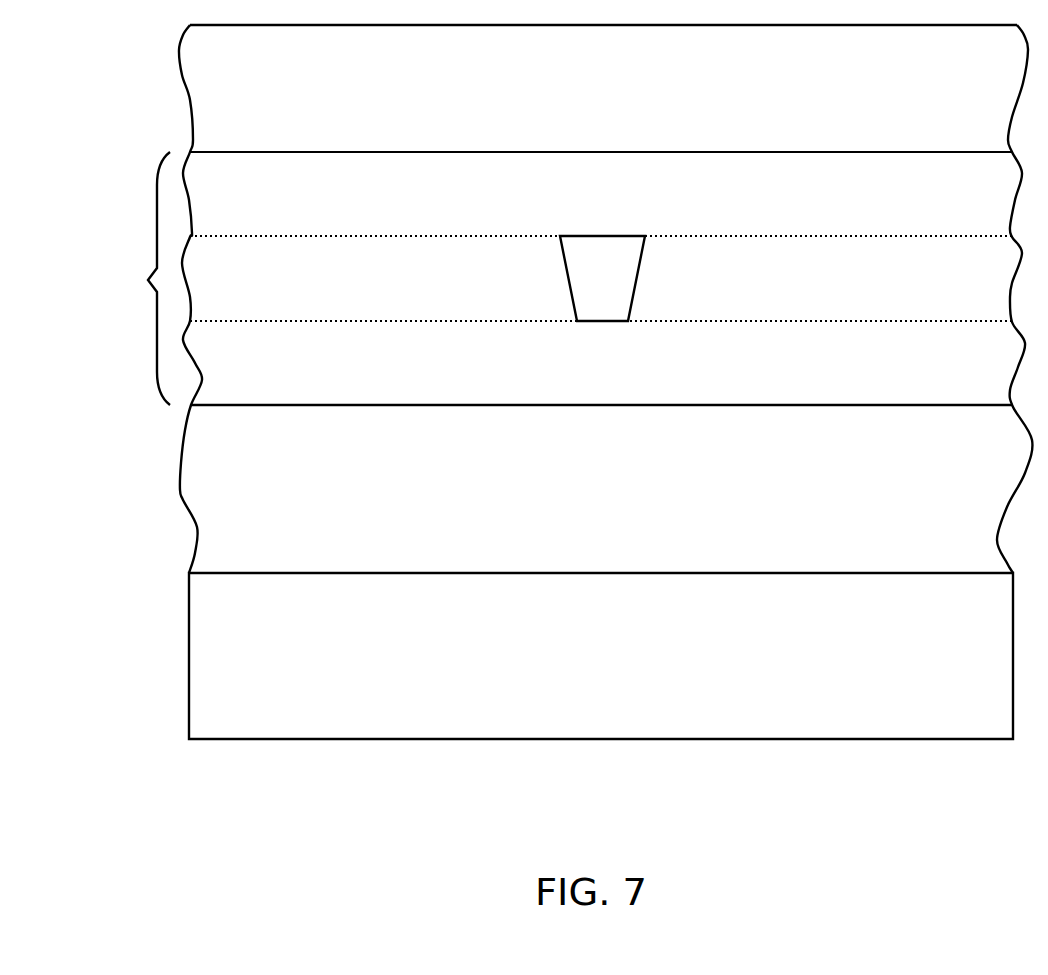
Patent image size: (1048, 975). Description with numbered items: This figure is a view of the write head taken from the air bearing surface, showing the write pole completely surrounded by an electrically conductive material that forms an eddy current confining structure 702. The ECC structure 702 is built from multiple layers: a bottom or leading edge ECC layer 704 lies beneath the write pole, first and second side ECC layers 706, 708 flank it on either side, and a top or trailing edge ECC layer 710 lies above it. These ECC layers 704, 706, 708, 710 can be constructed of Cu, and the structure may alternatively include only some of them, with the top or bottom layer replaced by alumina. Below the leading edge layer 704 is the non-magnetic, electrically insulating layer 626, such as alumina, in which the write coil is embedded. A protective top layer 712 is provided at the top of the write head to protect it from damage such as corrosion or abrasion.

The eddy current confining structure 702 is at (157, 195).
The bottom or leading edge ECC layer 704 is at (684, 365).
The first side ECC layer 706 is at (902, 278).
The second side ECC layer 708 is at (457, 278).
The top or trailing edge ECC layer 710 is at (684, 194).
The protective top layer 712 is at (684, 90).
The non-magnetic, electrically insulating layer 626 is at (684, 488).